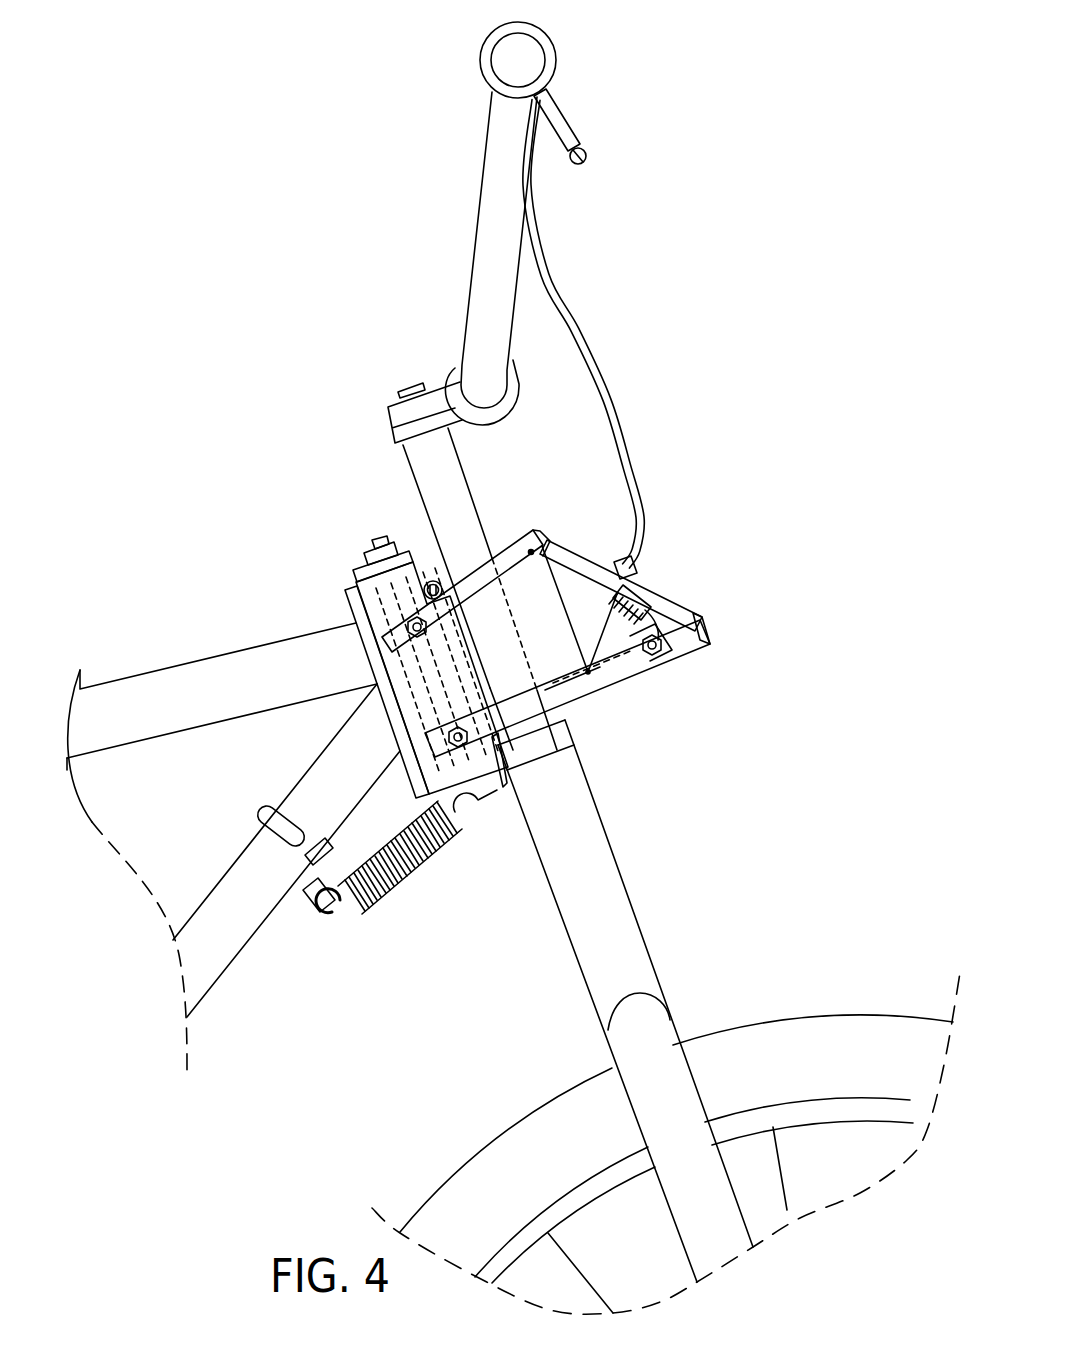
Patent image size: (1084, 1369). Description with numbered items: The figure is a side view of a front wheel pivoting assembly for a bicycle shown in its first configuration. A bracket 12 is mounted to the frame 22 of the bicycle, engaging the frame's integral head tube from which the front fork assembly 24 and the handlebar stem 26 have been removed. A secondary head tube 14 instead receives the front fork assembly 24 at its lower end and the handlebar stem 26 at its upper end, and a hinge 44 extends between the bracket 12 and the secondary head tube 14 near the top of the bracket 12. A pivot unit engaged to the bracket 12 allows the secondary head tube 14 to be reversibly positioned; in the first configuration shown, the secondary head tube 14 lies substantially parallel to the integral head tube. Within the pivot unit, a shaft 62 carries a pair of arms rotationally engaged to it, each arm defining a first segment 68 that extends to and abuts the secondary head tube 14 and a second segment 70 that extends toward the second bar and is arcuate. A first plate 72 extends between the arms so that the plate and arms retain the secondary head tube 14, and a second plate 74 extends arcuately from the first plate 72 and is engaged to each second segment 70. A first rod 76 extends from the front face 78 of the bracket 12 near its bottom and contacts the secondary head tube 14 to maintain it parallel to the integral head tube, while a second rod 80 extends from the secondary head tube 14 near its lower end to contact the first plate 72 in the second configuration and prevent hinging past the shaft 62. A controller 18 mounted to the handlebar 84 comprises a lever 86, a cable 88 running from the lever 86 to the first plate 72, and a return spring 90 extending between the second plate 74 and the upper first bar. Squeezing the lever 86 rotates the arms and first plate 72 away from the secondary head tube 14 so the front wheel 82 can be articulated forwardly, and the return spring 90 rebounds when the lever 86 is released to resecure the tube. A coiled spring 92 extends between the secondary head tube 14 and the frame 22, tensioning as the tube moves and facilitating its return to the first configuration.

The bracket 12 is at (373, 612).
The secondary head tube 14 is at (552, 690).
The controller 18 is at (630, 600).
The frame 22 is at (155, 688).
The front fork assembly 24 is at (583, 892).
The handlebar stem 26 is at (428, 465).
The hinge 44 is at (434, 583).
The shaft 62 is at (650, 672).
The first segment 68 is at (627, 680).
The second segment 70 is at (653, 649).
The first plate 72 is at (616, 684).
The second plate 74 is at (684, 608).
The first rod 76 is at (493, 803).
The front face 78 is at (457, 672).
The second rod 80 is at (573, 690).
The front wheel 82 is at (827, 1043).
The handlebar 84 is at (487, 209).
The lever 86 is at (557, 118).
The cable 88 is at (606, 398).
The return spring 90 is at (668, 600).
The coiled spring 92 is at (385, 893).